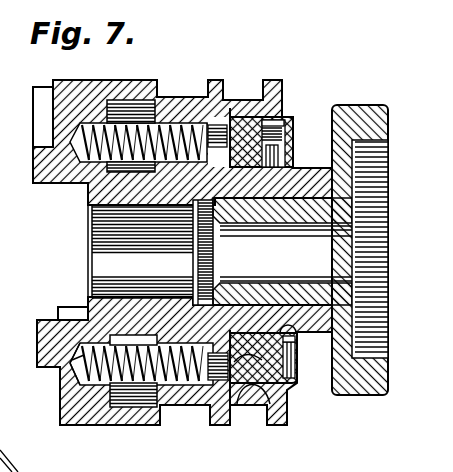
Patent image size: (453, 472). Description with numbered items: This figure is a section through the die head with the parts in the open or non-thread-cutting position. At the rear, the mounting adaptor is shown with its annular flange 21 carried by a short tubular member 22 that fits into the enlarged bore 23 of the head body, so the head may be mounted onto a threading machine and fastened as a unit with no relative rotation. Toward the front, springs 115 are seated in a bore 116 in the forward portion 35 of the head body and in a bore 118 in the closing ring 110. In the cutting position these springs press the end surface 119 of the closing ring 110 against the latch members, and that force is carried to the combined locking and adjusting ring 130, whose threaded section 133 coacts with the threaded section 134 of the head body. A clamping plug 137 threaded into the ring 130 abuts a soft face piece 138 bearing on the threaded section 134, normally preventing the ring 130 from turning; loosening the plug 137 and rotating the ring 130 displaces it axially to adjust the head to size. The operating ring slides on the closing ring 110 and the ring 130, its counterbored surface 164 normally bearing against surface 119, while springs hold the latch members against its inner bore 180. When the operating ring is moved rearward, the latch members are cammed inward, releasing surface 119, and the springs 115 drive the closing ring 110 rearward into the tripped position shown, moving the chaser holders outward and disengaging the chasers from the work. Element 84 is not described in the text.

The annular flange 21 is at (378, 124).
The short tubular member 22 is at (326, 212).
The enlarged bore 23 is at (256, 304).
The forward portion of head body 35 is at (82, 420).
The cone ring 84 is at (82, 376).
The closing ring 110 is at (226, 117).
The springs 115 is at (138, 386).
The bore 116 is at (76, 384).
The bore 118 is at (193, 116).
The end surface of closing ring 119 is at (247, 382).
The combined locking and adjusting ring 130 is at (281, 114).
The threaded section of ring 133 is at (290, 338).
The threaded section of die head body 134 is at (286, 160).
The clamping plug 137 is at (286, 122).
The soft face piece 138 is at (286, 140).
The counterbored surface of ring 164 is at (206, 426).
The inner bore of ring 180 is at (285, 386).